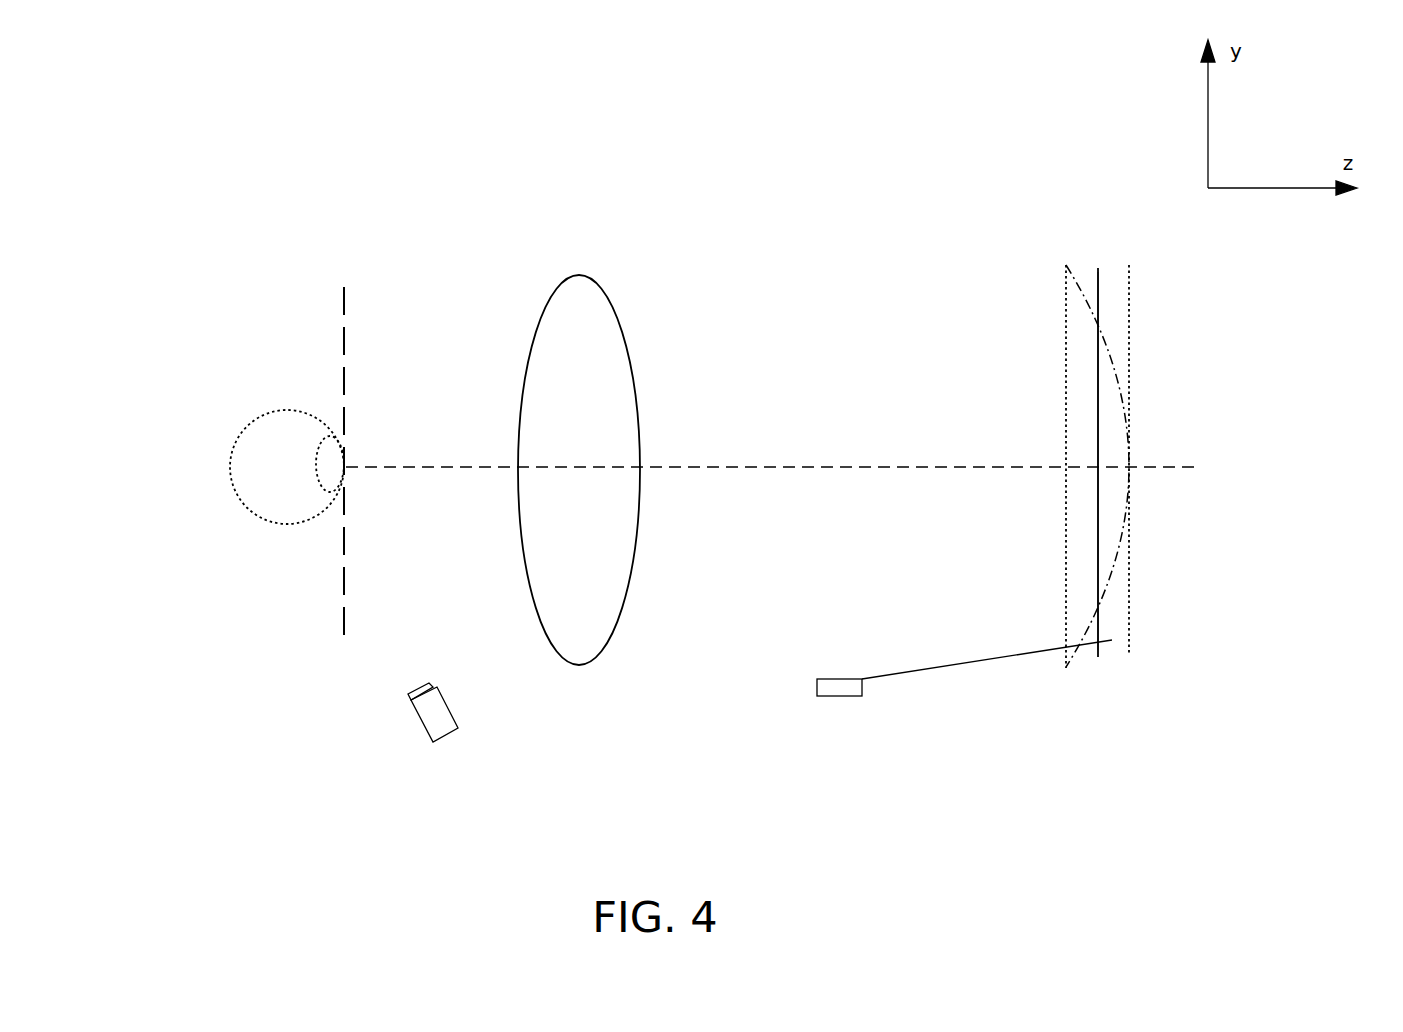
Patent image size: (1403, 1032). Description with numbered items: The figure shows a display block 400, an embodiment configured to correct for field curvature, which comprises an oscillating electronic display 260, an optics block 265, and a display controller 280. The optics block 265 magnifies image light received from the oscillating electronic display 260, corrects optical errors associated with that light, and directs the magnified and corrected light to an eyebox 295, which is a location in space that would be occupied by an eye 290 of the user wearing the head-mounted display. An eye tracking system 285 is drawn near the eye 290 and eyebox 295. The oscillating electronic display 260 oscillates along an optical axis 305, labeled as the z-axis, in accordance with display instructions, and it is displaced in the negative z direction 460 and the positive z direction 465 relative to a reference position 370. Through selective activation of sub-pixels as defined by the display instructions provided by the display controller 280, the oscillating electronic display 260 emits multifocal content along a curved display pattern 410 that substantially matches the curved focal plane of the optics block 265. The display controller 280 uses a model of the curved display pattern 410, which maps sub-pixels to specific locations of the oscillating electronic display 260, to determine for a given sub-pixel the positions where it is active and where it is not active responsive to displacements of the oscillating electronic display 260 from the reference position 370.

The display block 400 is at (193, 37).
The eye 290 is at (252, 422).
The eyebox 295 is at (347, 358).
The optical axis 305 is at (788, 468).
The optics block 265 is at (626, 596).
The eye tracking system 285 is at (435, 745).
The display controller 280 is at (862, 697).
The curved display pattern 410 is at (1090, 282).
The reference point 370 is at (1112, 660).
The -Z displacement 460 is at (1070, 662).
The +Z displacement 465 is at (1130, 658).
The oscillating electronic display 260 is at (1099, 552).